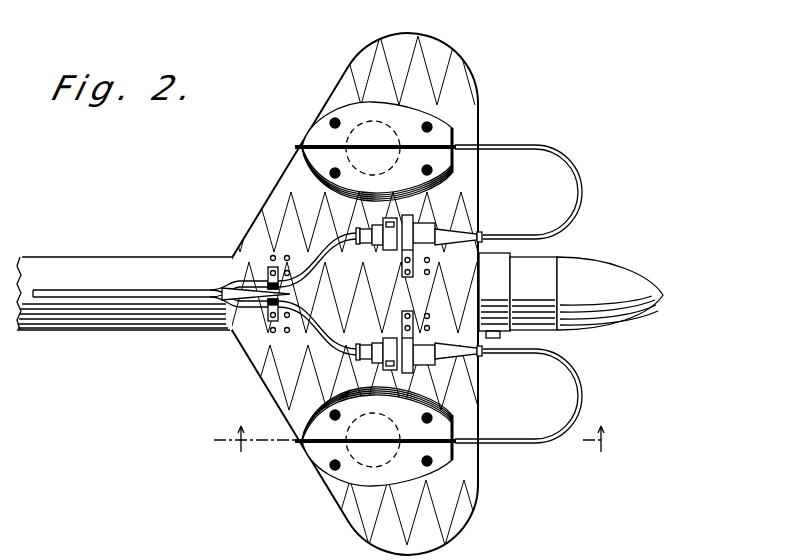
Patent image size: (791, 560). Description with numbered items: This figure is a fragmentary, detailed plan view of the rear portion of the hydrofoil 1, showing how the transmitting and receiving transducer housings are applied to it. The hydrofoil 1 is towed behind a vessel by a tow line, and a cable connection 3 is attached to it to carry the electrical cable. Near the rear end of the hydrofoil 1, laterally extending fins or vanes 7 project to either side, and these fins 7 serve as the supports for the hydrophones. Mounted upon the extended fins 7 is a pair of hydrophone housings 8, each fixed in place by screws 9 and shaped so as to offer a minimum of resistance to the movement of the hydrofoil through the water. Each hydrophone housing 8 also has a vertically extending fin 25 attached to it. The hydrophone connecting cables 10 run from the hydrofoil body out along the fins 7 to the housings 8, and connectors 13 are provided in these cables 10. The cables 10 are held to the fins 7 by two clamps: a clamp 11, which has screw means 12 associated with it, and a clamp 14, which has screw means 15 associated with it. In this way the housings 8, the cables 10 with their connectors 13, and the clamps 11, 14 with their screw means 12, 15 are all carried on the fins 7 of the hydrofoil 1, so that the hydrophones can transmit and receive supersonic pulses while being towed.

The hydrofoil 1 is at (642, 320).
The cable connection 3 is at (419, 439).
The fins or vanes 7 is at (462, 62).
The hydrophone housings 8 is at (447, 128).
The screws 9 is at (423, 167).
The hydrophone connecting cables 10 is at (583, 191).
The clamp 11 is at (414, 230).
The screw means 12 is at (402, 326).
The connectors 13 is at (392, 241).
The clamp 14 is at (269, 294).
The screw means 15 is at (268, 273).
The vertically extending fin 25 is at (298, 146).